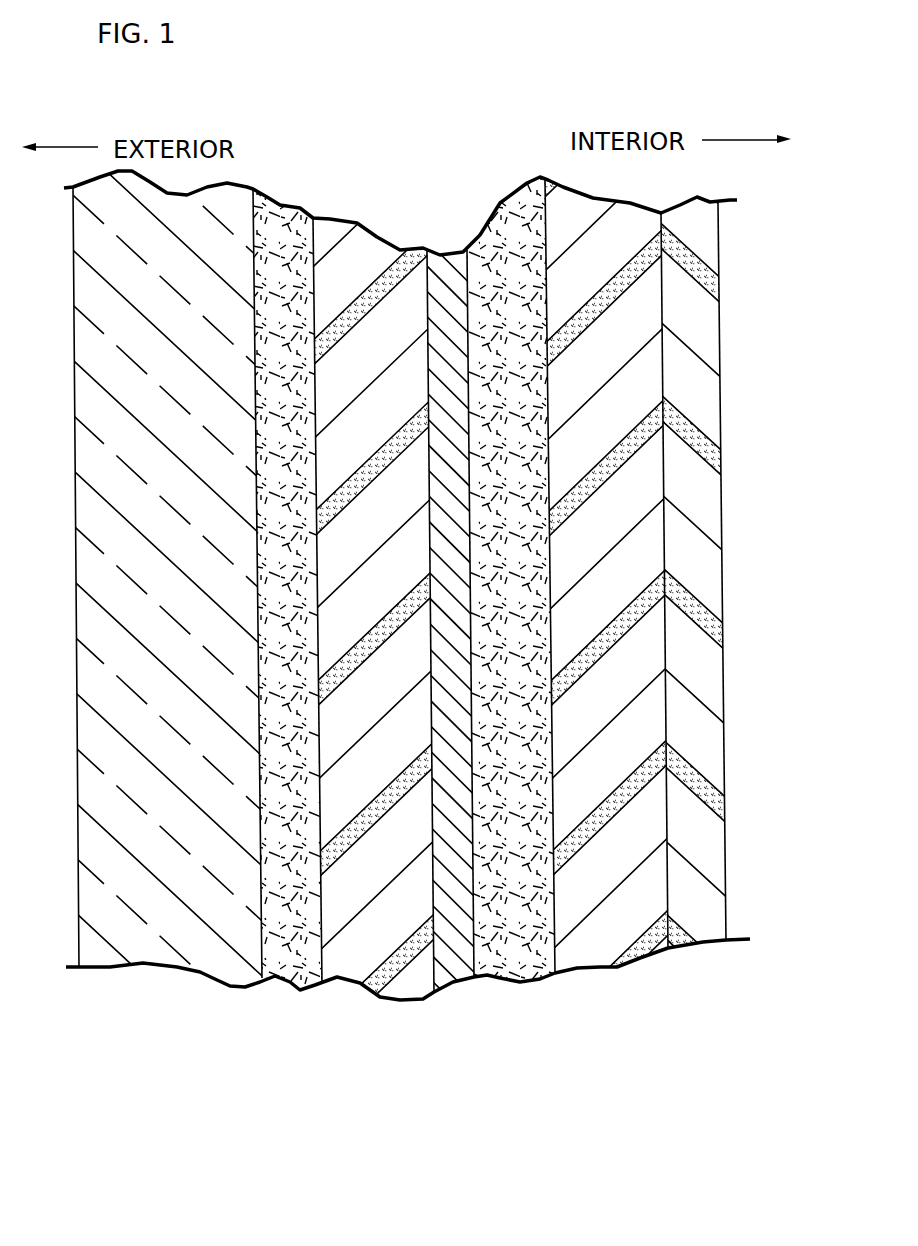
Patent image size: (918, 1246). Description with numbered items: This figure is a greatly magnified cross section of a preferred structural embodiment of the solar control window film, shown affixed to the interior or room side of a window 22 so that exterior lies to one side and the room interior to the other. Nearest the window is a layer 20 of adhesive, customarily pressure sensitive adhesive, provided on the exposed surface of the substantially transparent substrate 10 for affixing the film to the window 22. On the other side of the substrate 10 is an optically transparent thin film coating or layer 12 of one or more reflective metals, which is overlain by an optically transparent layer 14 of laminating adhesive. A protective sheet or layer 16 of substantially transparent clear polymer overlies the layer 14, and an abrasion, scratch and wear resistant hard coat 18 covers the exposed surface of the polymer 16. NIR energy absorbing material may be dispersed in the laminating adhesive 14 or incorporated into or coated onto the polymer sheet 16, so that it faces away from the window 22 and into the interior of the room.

The substrate 10 is at (354, 963).
The thin film coating or layer of reflective metals 12 is at (455, 965).
The layer of laminating adhesive 14 is at (515, 965).
The protective sheet or layer of clear polymer 16 is at (615, 953).
The hard coat 18 is at (707, 927).
The layer of adhesive 20 is at (290, 987).
The window 22 is at (141, 968).